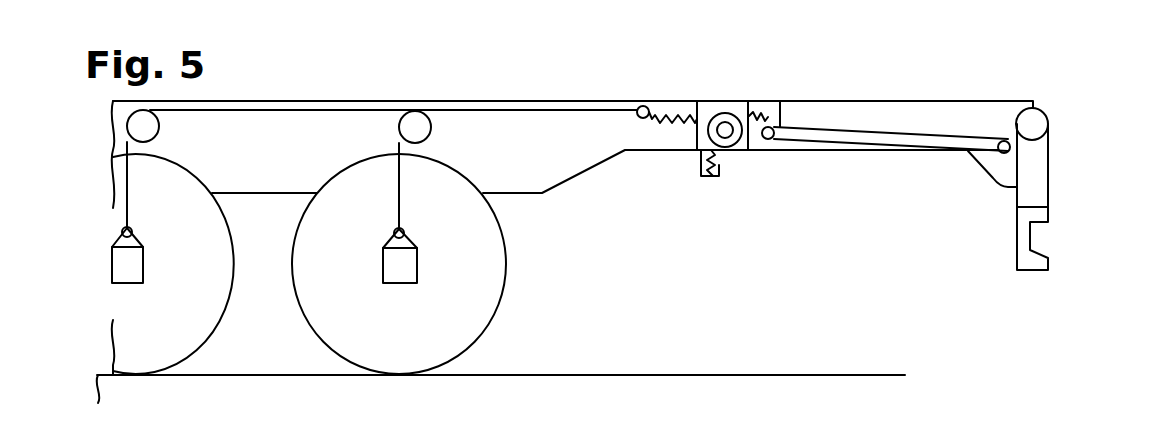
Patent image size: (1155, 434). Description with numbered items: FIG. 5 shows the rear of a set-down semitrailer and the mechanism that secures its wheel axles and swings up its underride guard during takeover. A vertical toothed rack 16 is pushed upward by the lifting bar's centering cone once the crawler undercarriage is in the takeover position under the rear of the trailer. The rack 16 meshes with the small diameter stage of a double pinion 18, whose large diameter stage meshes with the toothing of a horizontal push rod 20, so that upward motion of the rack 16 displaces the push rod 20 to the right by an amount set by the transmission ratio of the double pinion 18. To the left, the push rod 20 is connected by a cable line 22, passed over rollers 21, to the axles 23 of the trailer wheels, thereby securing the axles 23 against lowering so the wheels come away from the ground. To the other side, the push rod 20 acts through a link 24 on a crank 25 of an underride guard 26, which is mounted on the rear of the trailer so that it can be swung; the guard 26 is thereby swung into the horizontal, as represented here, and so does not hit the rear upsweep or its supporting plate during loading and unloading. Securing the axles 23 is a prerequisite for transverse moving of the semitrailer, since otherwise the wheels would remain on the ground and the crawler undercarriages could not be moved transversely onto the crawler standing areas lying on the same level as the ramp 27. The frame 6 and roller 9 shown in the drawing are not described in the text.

The frame 6 is at (591, 145).
The roller 9 is at (473, 303).
The vertical toothed rack 16 is at (706, 178).
The double pinion 18 is at (727, 119).
The horizontal push rod 20 is at (766, 109).
The rollers 21 is at (150, 130).
The cable line 22 is at (503, 109).
The axles of the trailer wheels 23 is at (135, 260).
The link 24 is at (915, 150).
The crank 25 is at (1012, 133).
The underride guard 26 is at (1040, 213).
The ramp 27 is at (670, 372).